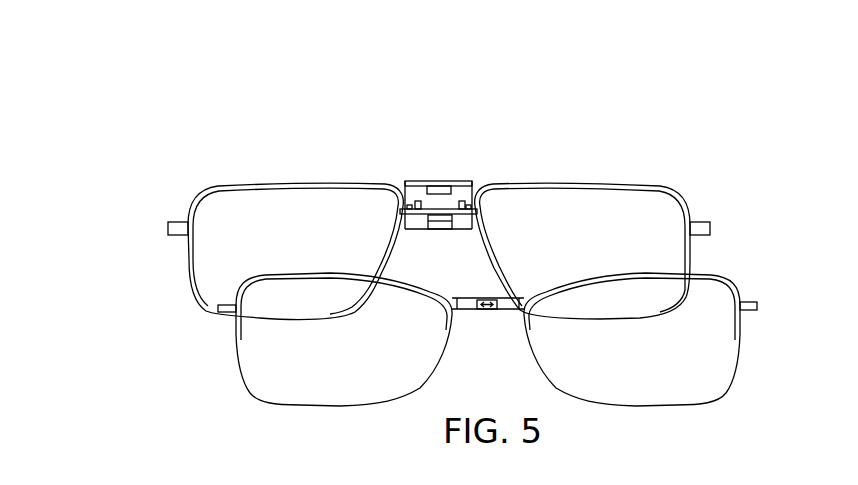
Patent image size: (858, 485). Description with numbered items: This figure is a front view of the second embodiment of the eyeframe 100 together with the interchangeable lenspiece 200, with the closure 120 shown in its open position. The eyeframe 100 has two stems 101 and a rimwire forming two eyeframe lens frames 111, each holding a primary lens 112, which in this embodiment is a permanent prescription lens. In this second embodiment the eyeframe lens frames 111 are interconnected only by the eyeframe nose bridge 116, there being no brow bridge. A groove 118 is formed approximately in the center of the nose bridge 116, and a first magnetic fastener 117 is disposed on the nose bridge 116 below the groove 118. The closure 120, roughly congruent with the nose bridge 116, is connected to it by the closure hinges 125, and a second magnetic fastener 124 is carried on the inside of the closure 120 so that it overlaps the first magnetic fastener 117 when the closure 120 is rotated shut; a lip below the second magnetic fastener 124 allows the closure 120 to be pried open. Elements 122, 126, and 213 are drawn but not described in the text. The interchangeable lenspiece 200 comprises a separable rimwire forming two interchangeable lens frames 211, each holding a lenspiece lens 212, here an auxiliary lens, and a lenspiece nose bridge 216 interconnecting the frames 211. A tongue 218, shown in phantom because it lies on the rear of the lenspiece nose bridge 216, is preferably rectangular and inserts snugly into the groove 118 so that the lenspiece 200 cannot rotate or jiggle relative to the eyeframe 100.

The eyeframe 100 is at (178, 182).
The stem 101 is at (172, 220).
The eyeframe lens frame 111 is at (183, 273).
The primary lens 112 is at (309, 250).
The eyeframe nose bridge 116 is at (417, 230).
The first magnetic fastener 117 is at (442, 229).
The groove 118 is at (456, 219).
The closure 120 is at (470, 156).
The top plate recess 122 is at (457, 181).
The second magnetic fastener 124 is at (432, 181).
The closure hinge 125 is at (415, 202).
The post foot 126 is at (409, 204).
The interchangeable lenspiece 200 is at (758, 390).
The interchangeable lens frame 211 is at (236, 345).
The lenspiece lens 212 is at (354, 368).
The hinge tab of auxiliary frame 213 is at (210, 317).
The lenspiece nose bridge 216 is at (460, 310).
The tongue 218 is at (485, 310).